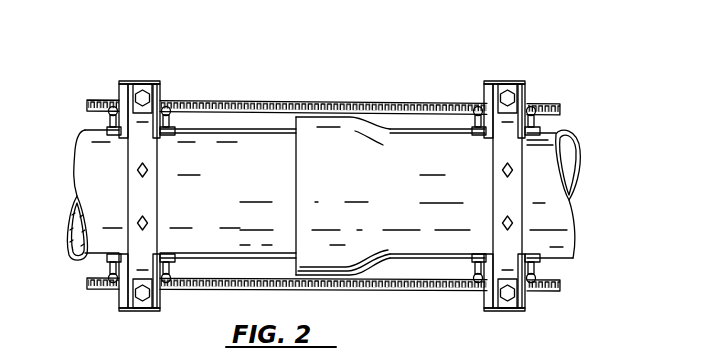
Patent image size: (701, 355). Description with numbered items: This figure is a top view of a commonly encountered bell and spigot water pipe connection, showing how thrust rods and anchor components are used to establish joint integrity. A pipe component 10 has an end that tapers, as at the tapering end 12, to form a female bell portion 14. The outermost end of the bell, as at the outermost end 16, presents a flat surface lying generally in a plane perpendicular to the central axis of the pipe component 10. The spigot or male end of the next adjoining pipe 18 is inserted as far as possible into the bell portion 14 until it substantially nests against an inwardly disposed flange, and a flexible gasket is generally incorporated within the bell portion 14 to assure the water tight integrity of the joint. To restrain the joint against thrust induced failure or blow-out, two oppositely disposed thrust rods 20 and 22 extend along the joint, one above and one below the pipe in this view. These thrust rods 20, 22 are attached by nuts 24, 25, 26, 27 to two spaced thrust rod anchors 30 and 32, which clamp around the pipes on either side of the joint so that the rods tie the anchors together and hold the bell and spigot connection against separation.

The pipe component 10 is at (550, 140).
The tapering end 12 is at (382, 124).
The bell portion 14 is at (325, 123).
The outermost end of bell portion 16 is at (296, 125).
The adjoining pipe 18 is at (103, 218).
The thrust rod 20 is at (217, 100).
The thrust rod 22 is at (420, 288).
The nut 24 is at (538, 108).
The nut 25 is at (117, 100).
The nut 26 is at (532, 293).
The nut 27 is at (115, 289).
The thrust rod anchor 30 is at (146, 80).
The thrust rod anchor 32 is at (517, 80).